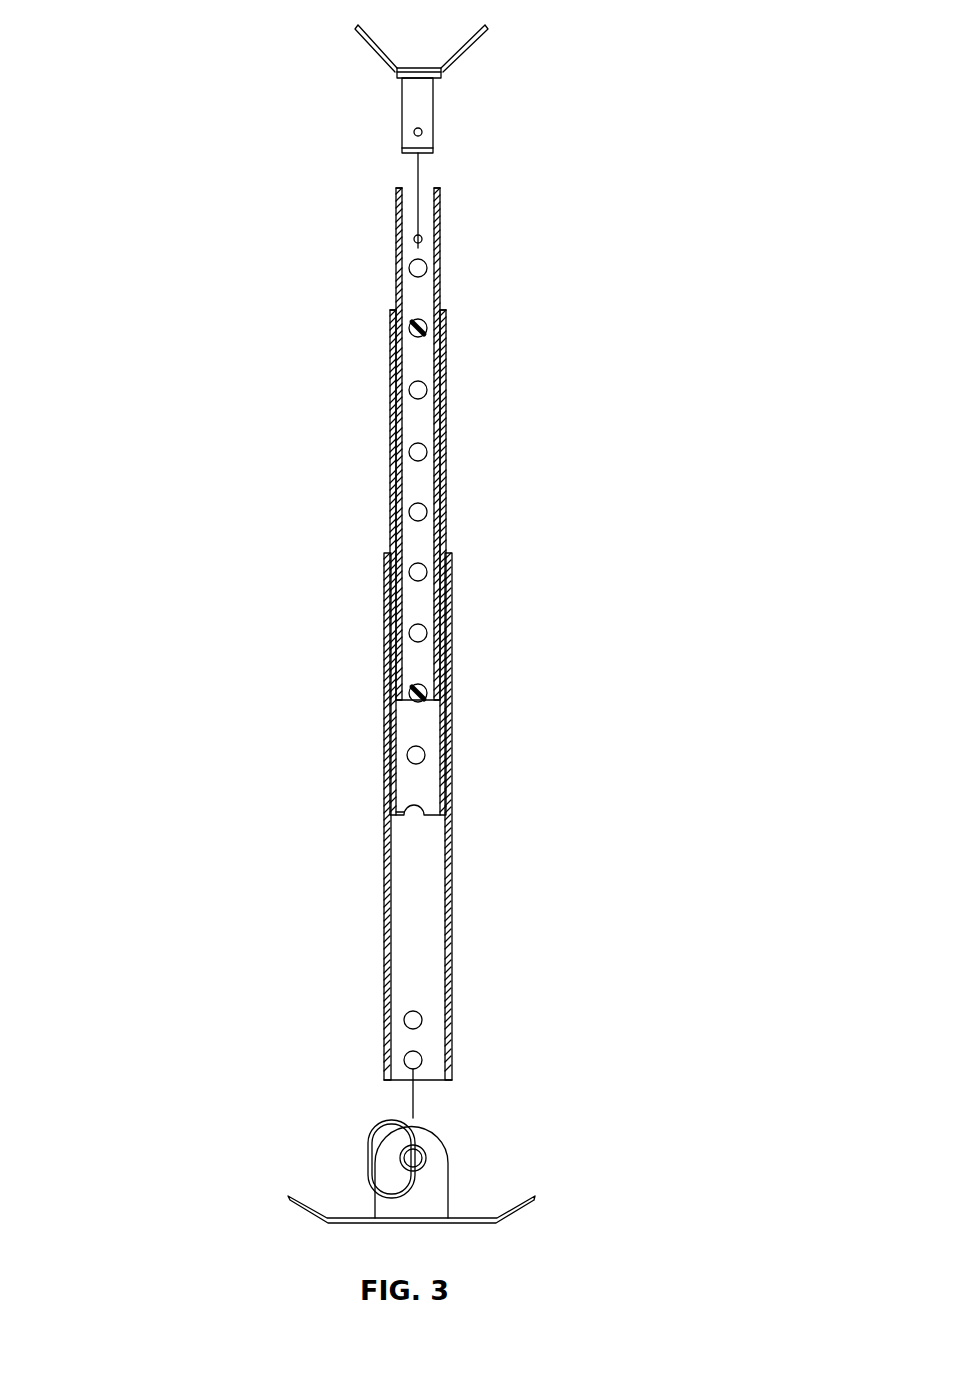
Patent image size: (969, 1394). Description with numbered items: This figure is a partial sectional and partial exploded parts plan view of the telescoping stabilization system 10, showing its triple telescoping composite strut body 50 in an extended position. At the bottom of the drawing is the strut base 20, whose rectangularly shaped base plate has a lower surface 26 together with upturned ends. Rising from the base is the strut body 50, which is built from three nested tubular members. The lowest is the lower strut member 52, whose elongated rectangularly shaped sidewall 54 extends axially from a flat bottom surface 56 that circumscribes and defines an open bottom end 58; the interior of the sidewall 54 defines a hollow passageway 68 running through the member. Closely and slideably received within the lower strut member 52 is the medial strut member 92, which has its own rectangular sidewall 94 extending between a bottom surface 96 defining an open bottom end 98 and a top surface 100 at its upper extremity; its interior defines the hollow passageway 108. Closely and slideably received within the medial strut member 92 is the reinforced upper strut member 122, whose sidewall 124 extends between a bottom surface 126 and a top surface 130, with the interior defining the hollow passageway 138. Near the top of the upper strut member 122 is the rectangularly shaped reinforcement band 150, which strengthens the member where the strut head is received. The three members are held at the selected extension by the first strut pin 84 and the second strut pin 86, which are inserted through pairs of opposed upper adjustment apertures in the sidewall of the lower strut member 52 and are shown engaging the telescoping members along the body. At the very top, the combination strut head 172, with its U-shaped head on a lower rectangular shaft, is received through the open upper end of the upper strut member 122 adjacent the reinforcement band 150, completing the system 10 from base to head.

The telescoping stabilization system 10 is at (172, 48).
The combination strut head 172 is at (508, 44).
The top surface of upper strut member 130 is at (396, 186).
The reinforcement band 150 is at (441, 190).
The sidewall of upper strut member 124 is at (396, 224).
The upper strut member 122 is at (451, 255).
The hollow passageway of upper strut member 138 is at (413, 290).
The top surface of medial strut member 100 is at (446, 316).
The second strut pin 86 is at (410, 333).
The medial strut member 92 is at (461, 389).
The triple telescoping composite strut body 50 is at (342, 461).
The sidewall of medial strut member 94 is at (447, 510).
The first strut pin 84 is at (428, 690).
The bottom surface of upper strut member 126 is at (392, 708).
The hollow passageway of medial strut member 108 is at (425, 720).
The bottom surface of medial strut member 96 is at (447, 824).
The open bottom end of medial strut member 98 is at (430, 838).
The lower strut member 52 is at (370, 889).
The sidewall of lower strut member 54 is at (384, 1004).
The hollow passageway of lower strut member 68 is at (428, 955).
The bottom surface of lower strut member 56 is at (447, 1083).
The open bottom end of lower strut member 58 is at (434, 1106).
The strut base 20 is at (334, 1176).
The lower surface of base plate 26 is at (465, 1226).